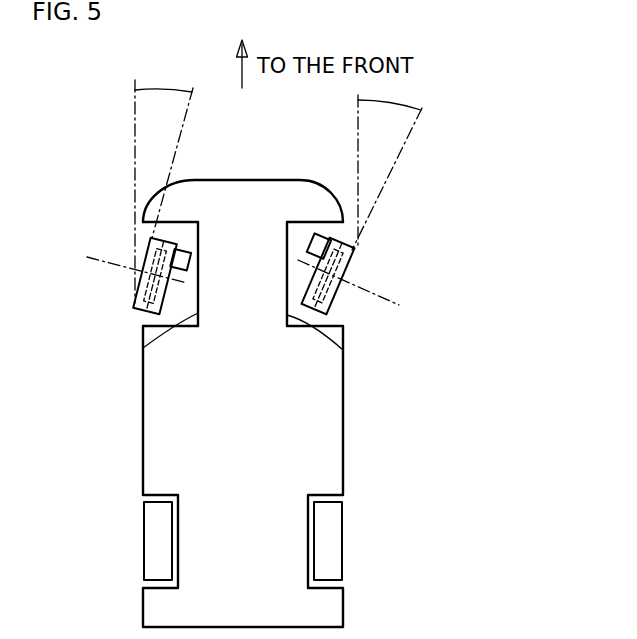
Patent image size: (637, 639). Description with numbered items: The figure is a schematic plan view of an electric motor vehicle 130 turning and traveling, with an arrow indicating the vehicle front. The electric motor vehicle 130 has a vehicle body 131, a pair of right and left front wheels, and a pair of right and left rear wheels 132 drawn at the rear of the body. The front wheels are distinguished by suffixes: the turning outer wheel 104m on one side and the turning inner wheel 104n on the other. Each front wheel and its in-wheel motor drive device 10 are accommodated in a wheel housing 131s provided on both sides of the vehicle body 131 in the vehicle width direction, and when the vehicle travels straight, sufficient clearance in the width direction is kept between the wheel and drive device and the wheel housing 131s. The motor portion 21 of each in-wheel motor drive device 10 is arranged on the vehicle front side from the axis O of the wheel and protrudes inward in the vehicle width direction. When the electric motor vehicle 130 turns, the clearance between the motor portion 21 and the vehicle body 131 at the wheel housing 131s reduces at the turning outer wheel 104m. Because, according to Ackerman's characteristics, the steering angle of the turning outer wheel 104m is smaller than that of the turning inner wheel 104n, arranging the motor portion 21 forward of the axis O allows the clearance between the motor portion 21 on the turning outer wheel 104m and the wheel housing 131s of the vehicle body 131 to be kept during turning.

The electric motor vehicle 130 is at (453, 213).
The vehicle body 131 is at (337, 417).
The wheel housing 131s is at (143, 348).
The rear wheels 132 is at (150, 543).
The turning outer wheel 104m is at (138, 295).
The turning inner wheel 104n is at (348, 262).
The in-wheel motor drive device 10 is at (148, 250).
The motor portion 21 is at (187, 248).
The axis O is at (242, 283).